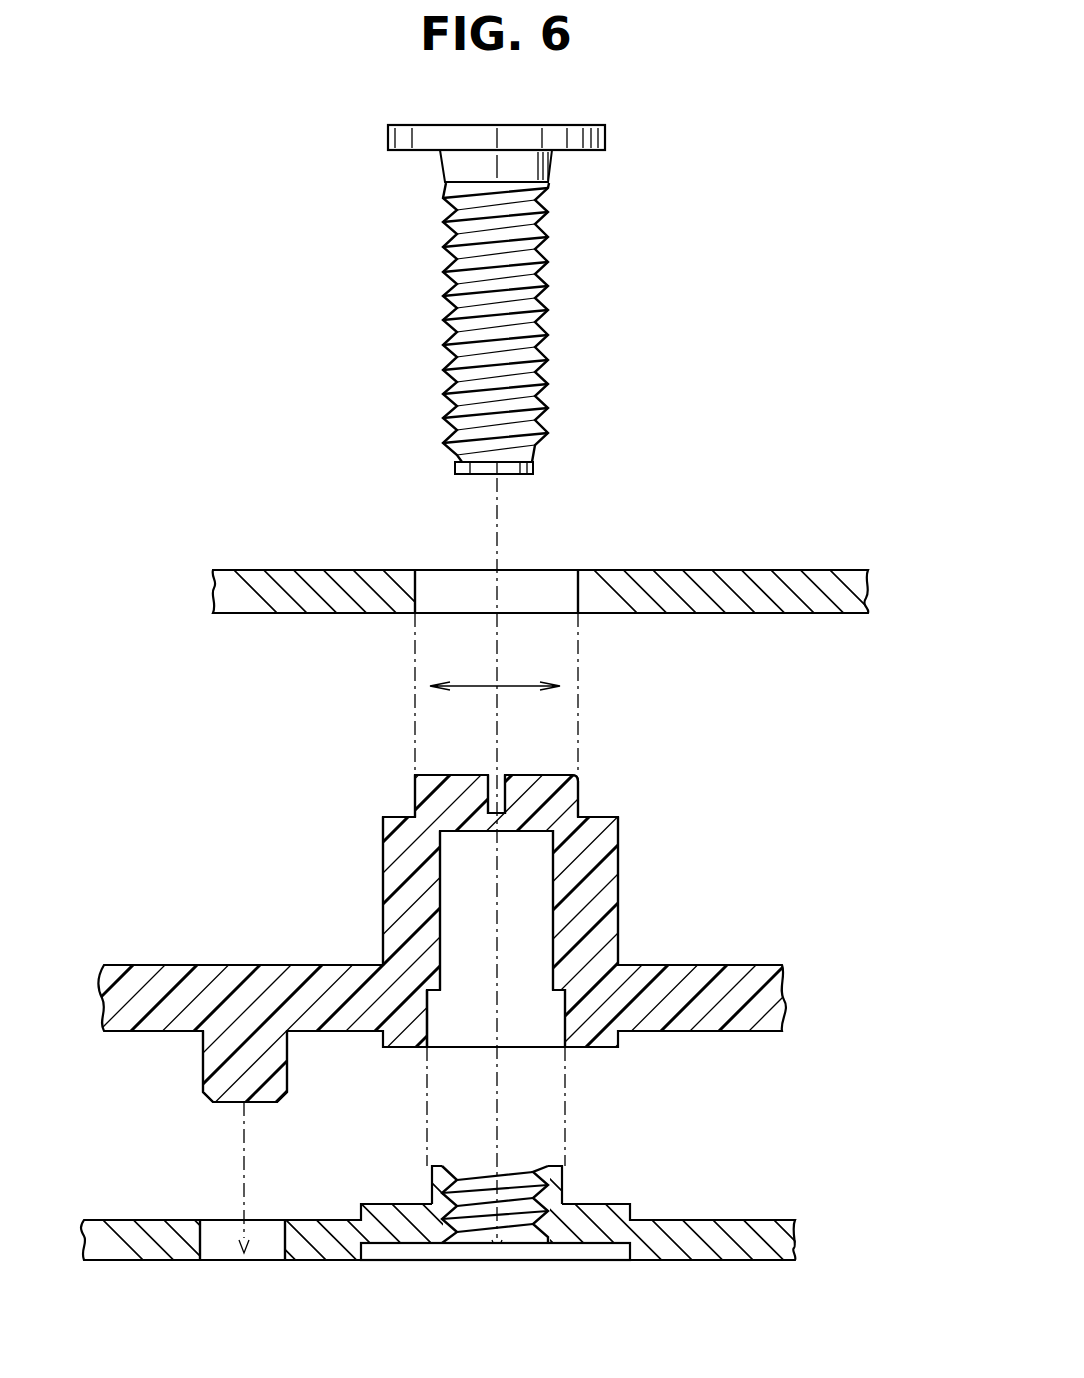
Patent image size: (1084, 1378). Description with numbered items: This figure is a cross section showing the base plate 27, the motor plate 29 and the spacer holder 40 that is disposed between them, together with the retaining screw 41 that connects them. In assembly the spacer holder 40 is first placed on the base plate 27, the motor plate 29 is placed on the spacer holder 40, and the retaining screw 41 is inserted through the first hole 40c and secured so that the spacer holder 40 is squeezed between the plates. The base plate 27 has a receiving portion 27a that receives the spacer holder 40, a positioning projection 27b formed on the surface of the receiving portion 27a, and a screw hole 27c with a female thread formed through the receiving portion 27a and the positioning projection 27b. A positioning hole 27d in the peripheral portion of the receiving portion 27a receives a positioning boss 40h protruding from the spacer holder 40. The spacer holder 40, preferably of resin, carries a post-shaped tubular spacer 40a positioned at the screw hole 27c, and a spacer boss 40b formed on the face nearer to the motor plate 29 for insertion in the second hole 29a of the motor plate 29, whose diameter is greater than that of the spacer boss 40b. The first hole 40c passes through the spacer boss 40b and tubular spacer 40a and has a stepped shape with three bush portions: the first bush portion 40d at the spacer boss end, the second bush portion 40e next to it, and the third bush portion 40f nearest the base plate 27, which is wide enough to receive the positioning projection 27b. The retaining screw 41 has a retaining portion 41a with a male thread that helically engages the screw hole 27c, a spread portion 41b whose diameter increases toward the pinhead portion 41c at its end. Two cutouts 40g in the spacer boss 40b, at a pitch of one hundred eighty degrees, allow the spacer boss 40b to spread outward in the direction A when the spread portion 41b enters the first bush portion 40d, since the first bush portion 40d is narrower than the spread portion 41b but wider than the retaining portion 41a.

The retaining screw 41 is at (493, 296).
The retaining portion 41a is at (552, 291).
The spread portion 41b is at (554, 169).
The pinhead portion 41c is at (605, 131).
The motor plate 29 is at (544, 548).
The second hole 29a is at (428, 586).
The direction A is at (510, 686).
The spacer holder 40 is at (515, 909).
The tubular spacer 40a is at (598, 903).
The spacer boss 40b is at (566, 794).
The first hole 40c is at (524, 904).
The first bush portion 40d is at (566, 780).
The second bush portion 40e is at (548, 962).
The third bush portion 40f is at (429, 1013).
The cutout 40g is at (491, 792).
The positioning boss 40h is at (226, 1079).
The base plate 27 is at (431, 1220).
The receiving portion 27a is at (388, 1216).
The positioning projection 27b is at (562, 1181).
The screw hole 27c is at (522, 1167).
The positioning hole 27d is at (210, 1246).